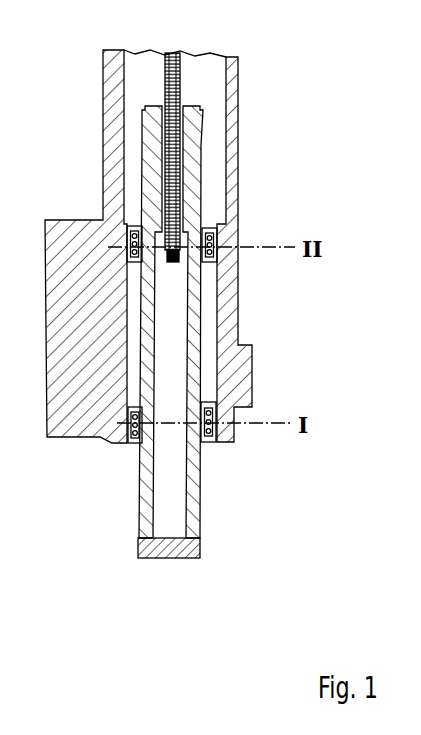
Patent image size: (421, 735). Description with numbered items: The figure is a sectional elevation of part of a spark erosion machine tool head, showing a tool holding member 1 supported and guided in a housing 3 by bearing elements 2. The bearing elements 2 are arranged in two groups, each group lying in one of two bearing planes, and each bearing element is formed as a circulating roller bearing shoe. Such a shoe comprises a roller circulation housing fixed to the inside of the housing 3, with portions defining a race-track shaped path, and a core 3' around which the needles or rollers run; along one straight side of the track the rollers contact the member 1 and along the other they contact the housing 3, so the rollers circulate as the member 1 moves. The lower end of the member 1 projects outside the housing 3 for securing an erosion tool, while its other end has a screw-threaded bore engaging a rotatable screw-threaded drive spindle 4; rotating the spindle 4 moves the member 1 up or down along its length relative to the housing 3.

The tool holding member 1 is at (192, 513).
The bearing elements 2 is at (219, 226).
The housing 3 is at (167, 246).
The core 3' is at (164, 332).
The screw-threaded drive spindle 4 is at (179, 66).